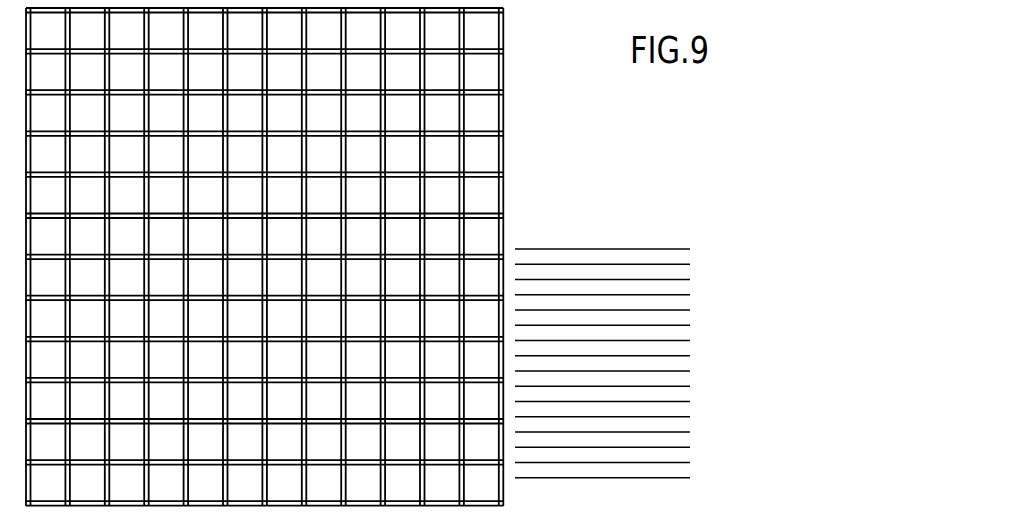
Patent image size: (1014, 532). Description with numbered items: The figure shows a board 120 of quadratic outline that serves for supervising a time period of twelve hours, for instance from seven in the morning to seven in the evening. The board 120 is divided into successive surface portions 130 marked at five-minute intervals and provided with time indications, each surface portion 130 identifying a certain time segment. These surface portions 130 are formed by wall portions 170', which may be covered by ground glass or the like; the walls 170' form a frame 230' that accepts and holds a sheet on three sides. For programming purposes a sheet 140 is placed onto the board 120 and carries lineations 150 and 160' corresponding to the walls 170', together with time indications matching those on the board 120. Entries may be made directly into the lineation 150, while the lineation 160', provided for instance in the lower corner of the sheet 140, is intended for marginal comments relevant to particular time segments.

The board 120 is at (507, 34).
The surface portions 130 is at (492, 86).
The wall portions 170' is at (305, 131).
The horizontal grid line 230' is at (305, 196).
The lineation 150 is at (505, 238).
The lineation 160' is at (611, 237).
The sheet 140 is at (614, 486).